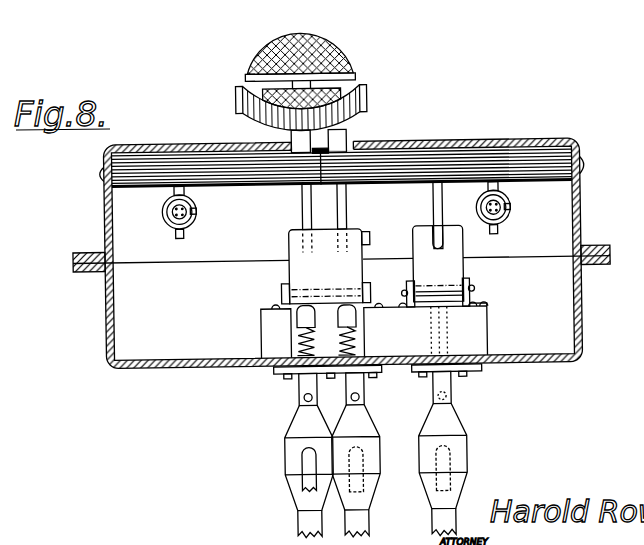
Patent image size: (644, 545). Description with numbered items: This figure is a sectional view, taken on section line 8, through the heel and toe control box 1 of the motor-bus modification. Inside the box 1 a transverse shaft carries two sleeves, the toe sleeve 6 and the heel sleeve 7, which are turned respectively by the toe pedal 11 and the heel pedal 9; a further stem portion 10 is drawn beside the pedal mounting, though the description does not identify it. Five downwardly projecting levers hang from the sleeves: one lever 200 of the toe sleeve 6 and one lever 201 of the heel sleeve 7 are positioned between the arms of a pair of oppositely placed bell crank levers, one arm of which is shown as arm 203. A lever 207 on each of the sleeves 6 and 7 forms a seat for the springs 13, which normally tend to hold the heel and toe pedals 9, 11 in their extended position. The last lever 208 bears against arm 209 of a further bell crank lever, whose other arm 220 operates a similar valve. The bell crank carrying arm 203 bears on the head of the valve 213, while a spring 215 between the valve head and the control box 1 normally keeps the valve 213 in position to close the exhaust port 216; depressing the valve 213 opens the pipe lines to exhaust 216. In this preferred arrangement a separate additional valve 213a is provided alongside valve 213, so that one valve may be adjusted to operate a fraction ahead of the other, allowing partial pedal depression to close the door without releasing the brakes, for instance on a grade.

The heel and toe control box 1 is at (580, 211).
The toe sleeve 6 is at (168, 165).
The heel sleeve 7 is at (478, 160).
The section line 8 is at (349, 132).
The heel pedal 9 is at (370, 95).
The knob stem block 10 is at (292, 135).
The toe pedal 11 is at (346, 50).
The spring 13 is at (159, 219).
The lever of the toe sleeve 200 is at (303, 210).
The lever of the heel sleeve 201 is at (347, 200).
The bell crank lever arm 203 is at (304, 272).
The spring seat lever 207 is at (177, 236).
The lever 208 is at (434, 220).
The bell crank lever arm 209 is at (455, 267).
The valve 213 is at (283, 457).
The additional valve 213a is at (358, 422).
The spring 215 is at (268, 340).
The exhaust port 216 is at (298, 400).
The bell crank arm 220 is at (470, 292).